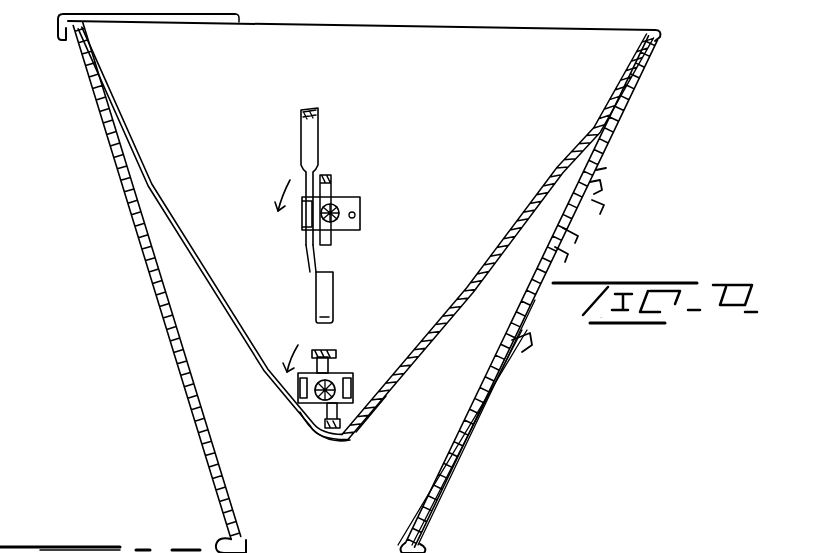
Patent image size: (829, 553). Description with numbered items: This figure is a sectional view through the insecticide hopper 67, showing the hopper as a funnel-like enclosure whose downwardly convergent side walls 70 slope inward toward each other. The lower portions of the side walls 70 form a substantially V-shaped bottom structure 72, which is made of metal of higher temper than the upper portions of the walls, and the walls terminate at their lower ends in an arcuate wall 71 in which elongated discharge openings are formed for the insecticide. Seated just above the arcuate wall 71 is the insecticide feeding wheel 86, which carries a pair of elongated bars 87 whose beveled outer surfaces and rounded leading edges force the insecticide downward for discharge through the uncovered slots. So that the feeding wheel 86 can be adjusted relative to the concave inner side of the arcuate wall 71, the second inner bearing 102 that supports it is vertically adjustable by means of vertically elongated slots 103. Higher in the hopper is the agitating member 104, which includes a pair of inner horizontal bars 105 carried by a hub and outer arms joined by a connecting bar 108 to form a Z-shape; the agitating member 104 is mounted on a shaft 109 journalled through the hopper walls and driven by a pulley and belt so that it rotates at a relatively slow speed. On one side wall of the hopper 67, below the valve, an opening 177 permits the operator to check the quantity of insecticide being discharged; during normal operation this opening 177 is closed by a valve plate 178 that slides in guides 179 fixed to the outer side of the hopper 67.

The insecticide hopper 67 is at (164, 132).
The downwardly convergent side walls 70 is at (463, 291).
The arcuate wall 71 is at (312, 438).
The V-shaped bottom structure 72 is at (381, 394).
The insecticide feeding wheel 86 is at (336, 378).
The elongated bars 87 is at (331, 365).
The second inner bearing 102 is at (357, 380).
The vertically elongated slots 103 is at (358, 379).
The agitating member 104 is at (322, 143).
The inner horizontal bars 105 is at (340, 240).
The connecting bar 108 is at (334, 279).
The shaft 109 is at (334, 206).
The opening 177 is at (442, 466).
The valve plate 178 is at (494, 382).
The guides 179 is at (441, 503).